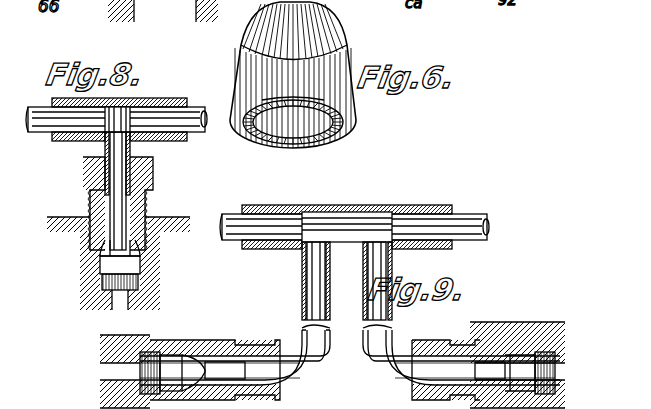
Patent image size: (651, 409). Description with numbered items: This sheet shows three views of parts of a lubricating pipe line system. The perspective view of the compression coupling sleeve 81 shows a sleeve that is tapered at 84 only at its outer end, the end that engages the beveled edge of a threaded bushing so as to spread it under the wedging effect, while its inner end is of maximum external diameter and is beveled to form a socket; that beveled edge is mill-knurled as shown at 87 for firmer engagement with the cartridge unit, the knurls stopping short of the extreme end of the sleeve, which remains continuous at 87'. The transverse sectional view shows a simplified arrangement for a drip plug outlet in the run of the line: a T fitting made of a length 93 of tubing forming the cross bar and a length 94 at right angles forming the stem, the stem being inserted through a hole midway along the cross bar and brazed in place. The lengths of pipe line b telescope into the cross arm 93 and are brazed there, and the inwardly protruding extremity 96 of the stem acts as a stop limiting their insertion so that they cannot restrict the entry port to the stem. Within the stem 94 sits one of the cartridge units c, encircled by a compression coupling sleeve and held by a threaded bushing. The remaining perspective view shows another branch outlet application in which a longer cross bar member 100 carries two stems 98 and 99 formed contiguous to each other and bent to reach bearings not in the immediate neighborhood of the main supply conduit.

In FIG. 8, the inwardly protruding extremity of the T stem 96 is at (118, 112).
In FIG. 8, the cross bar length of tubing 93 is at (168, 100).
In FIG. 8, the lengths of pipe line b is at (48, 118).
In FIG. 9, the lengths of pipe line b is at (272, 225).
In FIG. 8, the stem length of tubing 94 is at (130, 150).
In FIG. 8, the cartridge unit c is at (100, 258).
In FIG. 6, the tapered outer end 84 is at (325, 28).
In FIG. 6, the compression coupling sleeve 81 is at (345, 78).
In FIG. 6, the continuous extreme end of the sleeve 87' is at (333, 123).
In FIG. 6, the mill-knurled beveled edge 87 is at (302, 136).
In FIG. 9, the cross bar member 100 is at (332, 216).
In FIG. 9, the stem 98 is at (302, 335).
In FIG. 9, the stem 99 is at (392, 335).